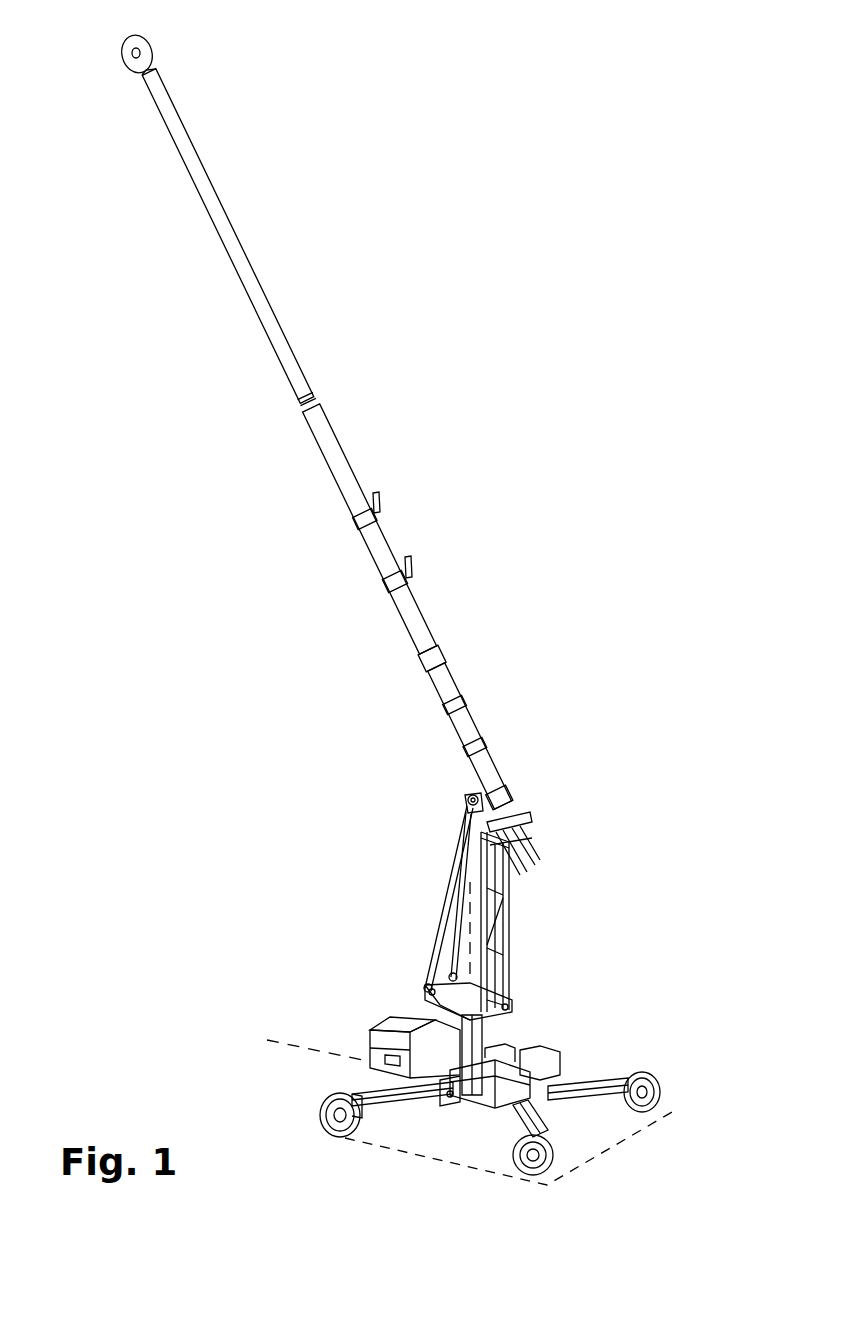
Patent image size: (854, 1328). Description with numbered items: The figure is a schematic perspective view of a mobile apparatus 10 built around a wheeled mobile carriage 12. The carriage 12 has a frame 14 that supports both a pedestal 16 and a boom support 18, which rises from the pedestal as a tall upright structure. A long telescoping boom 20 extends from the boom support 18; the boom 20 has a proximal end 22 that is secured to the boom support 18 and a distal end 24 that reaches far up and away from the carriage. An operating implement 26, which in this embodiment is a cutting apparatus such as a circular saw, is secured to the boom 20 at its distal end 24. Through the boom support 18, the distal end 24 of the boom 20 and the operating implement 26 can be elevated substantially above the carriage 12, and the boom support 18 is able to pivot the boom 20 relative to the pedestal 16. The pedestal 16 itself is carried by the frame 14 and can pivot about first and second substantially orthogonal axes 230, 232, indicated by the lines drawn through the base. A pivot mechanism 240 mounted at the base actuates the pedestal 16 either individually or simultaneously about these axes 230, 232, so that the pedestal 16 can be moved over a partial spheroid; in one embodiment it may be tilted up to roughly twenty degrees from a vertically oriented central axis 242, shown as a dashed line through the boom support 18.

The mobile apparatus 10 is at (633, 327).
The mobile carriage 12 is at (602, 1057).
The frame 14 is at (508, 1062).
The pedestal 16 is at (504, 1040).
The boom support 18 is at (451, 843).
The boom 20 is at (369, 446).
The proximal end 22 is at (493, 735).
The distal end 24 is at (166, 130).
The operating implement 26 is at (155, 47).
The first axis 230 is at (444, 1107).
The second axis 232 is at (282, 1040).
The pivot mechanism 240 is at (458, 1082).
The central axis 242 is at (478, 941).